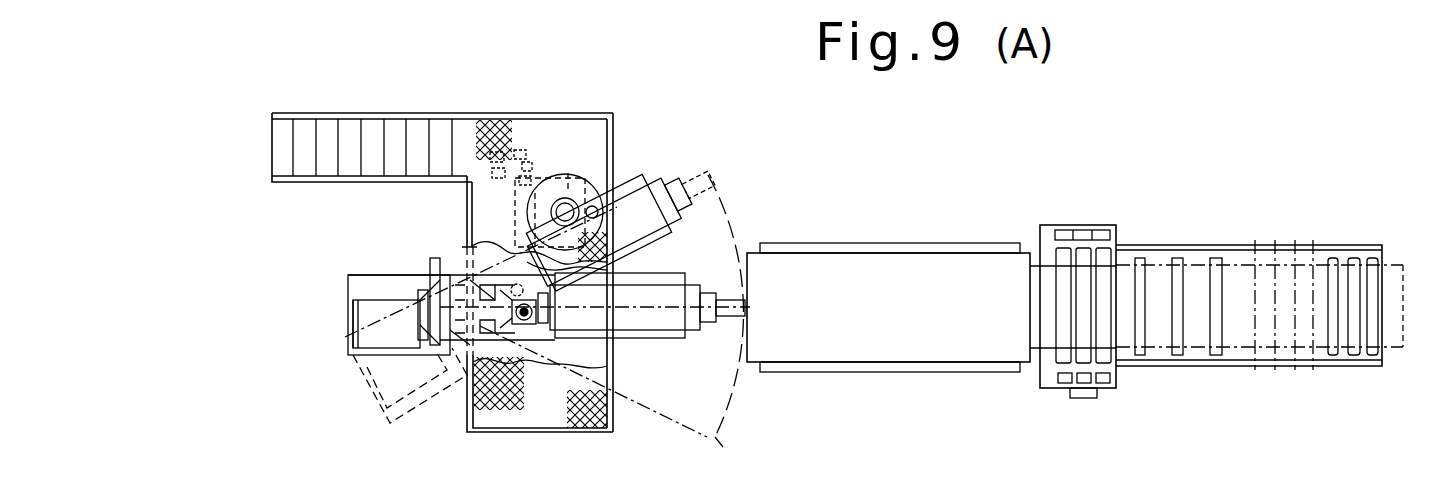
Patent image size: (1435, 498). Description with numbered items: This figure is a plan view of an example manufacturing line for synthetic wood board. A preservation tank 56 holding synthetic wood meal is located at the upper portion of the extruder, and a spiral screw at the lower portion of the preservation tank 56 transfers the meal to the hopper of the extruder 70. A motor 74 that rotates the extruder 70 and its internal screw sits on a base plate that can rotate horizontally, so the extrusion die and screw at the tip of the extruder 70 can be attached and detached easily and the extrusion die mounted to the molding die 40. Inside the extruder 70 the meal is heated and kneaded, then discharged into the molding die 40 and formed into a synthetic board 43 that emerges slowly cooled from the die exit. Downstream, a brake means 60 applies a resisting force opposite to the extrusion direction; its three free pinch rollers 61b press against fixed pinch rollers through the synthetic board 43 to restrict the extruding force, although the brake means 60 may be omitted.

The preservation tank 56 is at (557, 170).
The motor 74 is at (348, 330).
The extruder 70 is at (652, 330).
The molding die 40 is at (877, 353).
The free pinch rollers 61b is at (1066, 258).
The brake means 60 is at (1049, 388).
The synthetic board 43 is at (1243, 347).